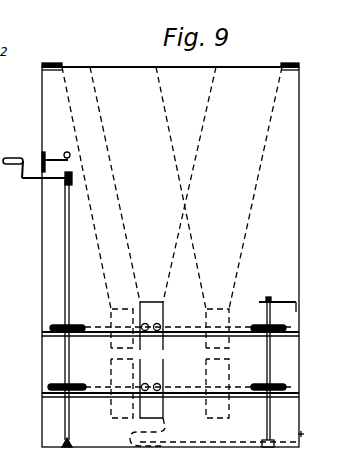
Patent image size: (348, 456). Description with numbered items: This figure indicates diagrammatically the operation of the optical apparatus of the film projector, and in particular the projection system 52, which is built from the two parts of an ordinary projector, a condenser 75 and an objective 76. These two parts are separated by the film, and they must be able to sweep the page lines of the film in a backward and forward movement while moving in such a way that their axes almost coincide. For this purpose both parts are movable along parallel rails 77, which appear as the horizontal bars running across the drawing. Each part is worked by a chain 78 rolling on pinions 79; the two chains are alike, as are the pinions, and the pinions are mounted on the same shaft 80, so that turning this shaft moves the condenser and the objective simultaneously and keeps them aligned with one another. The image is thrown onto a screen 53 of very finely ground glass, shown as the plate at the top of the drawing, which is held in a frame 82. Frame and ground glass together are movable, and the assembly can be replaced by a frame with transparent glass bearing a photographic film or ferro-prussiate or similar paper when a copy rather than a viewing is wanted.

The frame 82 is at (53, 64).
The screen 53 is at (112, 66).
The shaft 80 is at (67, 252).
The pinions 79 is at (52, 326).
The parallel rails 77 is at (42, 335).
The chain 78 is at (241, 386).
The objective 76 is at (151, 310).
The system for projection 52 is at (221, 353).
The condenser 75 is at (145, 410).